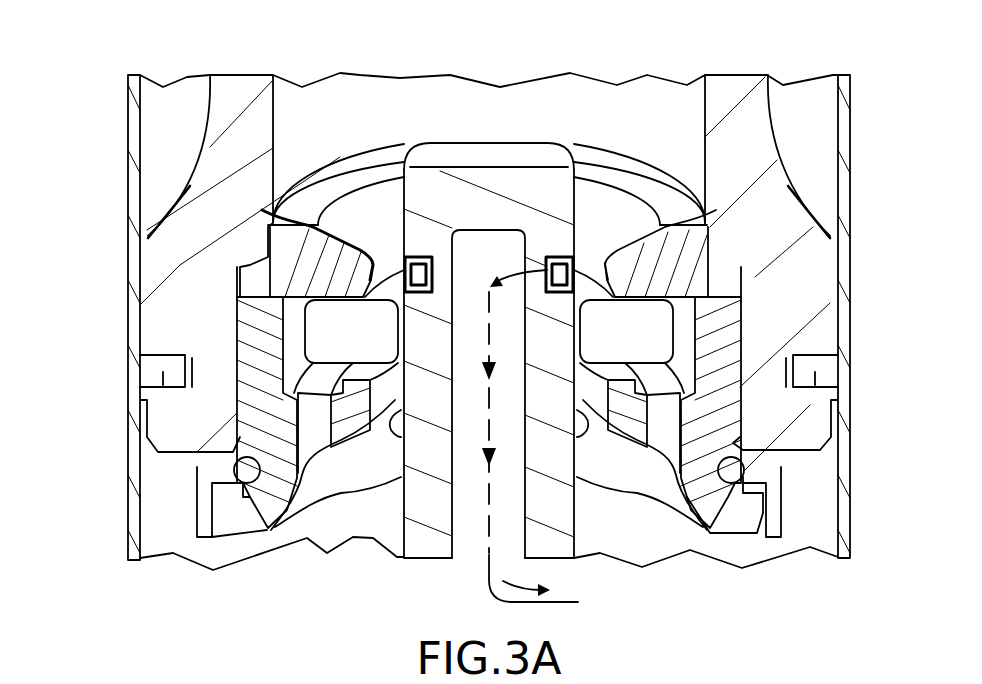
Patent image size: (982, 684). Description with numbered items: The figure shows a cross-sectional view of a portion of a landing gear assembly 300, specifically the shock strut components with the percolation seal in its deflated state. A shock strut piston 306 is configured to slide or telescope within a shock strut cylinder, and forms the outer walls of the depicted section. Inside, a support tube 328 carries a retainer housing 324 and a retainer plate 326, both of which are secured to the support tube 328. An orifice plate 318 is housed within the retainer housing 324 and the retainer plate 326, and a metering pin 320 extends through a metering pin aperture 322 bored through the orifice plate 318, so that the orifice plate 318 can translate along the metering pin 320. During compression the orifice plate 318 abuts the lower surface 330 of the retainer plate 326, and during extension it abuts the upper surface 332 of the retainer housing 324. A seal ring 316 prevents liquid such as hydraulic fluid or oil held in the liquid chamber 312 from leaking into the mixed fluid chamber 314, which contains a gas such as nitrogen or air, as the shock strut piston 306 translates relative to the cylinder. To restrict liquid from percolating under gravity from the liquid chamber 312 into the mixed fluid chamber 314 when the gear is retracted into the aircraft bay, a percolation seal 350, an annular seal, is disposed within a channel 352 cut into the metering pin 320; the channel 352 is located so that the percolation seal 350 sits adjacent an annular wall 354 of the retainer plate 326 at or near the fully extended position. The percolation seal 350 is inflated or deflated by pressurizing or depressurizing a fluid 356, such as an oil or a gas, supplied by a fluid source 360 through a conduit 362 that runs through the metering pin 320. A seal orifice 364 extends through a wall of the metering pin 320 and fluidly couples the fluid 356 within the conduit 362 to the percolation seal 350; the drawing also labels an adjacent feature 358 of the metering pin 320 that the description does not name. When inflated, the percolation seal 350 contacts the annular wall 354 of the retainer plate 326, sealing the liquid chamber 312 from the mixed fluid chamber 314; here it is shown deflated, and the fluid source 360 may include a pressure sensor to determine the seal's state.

The landing gear assembly 300 is at (111, 83).
The shock strut piston 306 is at (843, 208).
The liquid chamber 312 is at (350, 537).
The mixed fluid chamber 314 is at (623, 100).
The seal ring 316 is at (823, 370).
The orifice plate 318 is at (310, 333).
The metering pin 320 is at (563, 510).
The metering pin aperture 322 is at (310, 360).
The retainer housing 324 is at (727, 403).
The retainer plate 326 is at (688, 262).
The support tube 328 is at (755, 120).
The lower surface 330 is at (310, 297).
The upper surface 332 is at (347, 380).
The percolation seal 350 is at (397, 262).
The channel 352 is at (427, 262).
The annular wall 354 is at (262, 210).
The fluid 356 is at (483, 497).
The piston stem 358 is at (517, 520).
The fluid source 360 is at (588, 613).
The conduit 362 is at (460, 430).
The seal orifice 364 is at (537, 262).